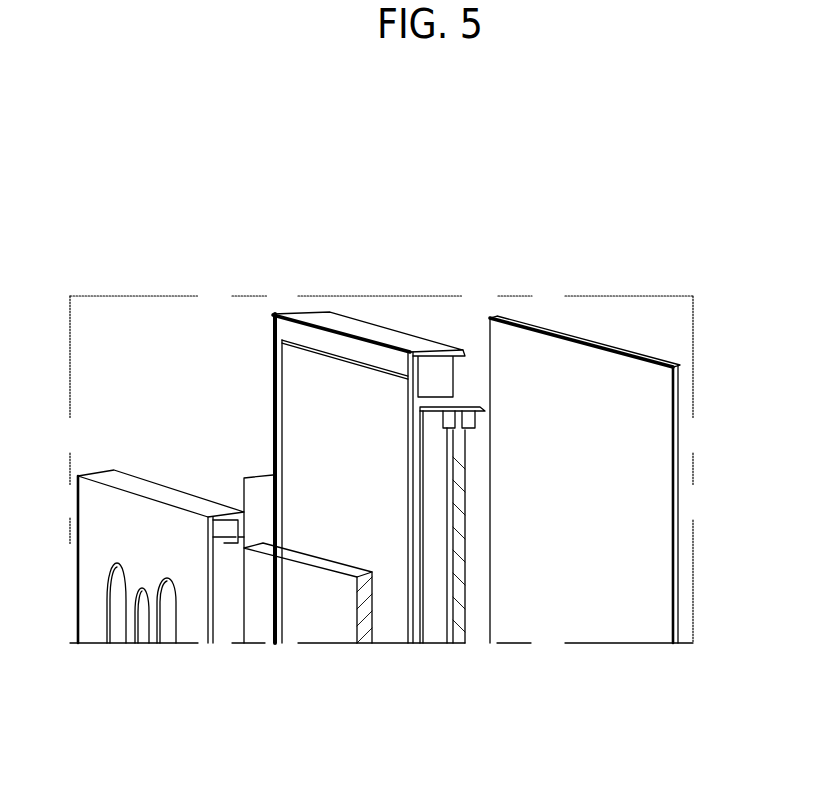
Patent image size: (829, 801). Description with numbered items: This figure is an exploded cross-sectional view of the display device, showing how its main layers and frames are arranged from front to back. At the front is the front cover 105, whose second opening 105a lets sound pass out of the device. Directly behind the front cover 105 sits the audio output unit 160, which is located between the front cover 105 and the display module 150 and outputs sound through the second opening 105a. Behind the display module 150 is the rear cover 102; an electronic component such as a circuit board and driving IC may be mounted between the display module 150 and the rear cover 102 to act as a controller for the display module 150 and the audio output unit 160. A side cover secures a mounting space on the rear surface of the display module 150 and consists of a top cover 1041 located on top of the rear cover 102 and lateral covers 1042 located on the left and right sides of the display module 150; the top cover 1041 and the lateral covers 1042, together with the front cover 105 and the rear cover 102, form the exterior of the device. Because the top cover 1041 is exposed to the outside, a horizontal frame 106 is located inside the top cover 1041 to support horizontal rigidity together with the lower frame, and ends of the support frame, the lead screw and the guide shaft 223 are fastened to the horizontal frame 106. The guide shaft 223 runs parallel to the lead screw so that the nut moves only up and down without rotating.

The rear cover 102 is at (637, 403).
The front cover 105 is at (100, 517).
The second opening 105a is at (115, 610).
The horizontal frame 106 is at (478, 406).
The top cover 1041 is at (452, 398).
The lateral cover 1042 is at (262, 487).
The display module 150 is at (325, 400).
The audio output unit 160 is at (302, 612).
The guide shaft 223 is at (453, 527).